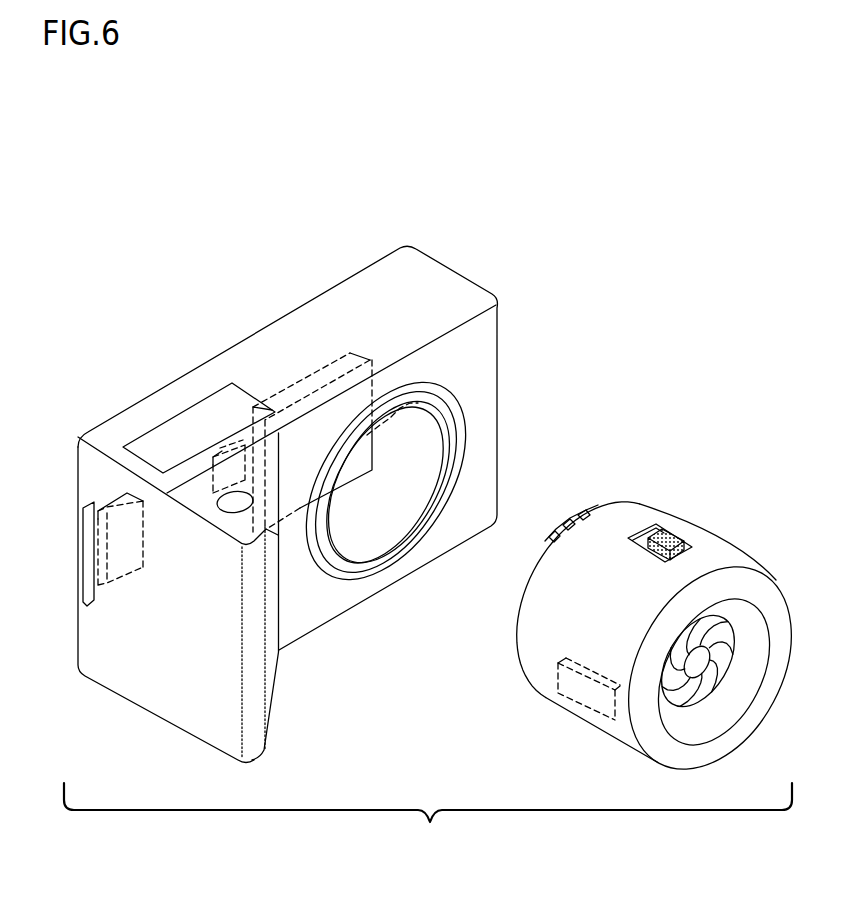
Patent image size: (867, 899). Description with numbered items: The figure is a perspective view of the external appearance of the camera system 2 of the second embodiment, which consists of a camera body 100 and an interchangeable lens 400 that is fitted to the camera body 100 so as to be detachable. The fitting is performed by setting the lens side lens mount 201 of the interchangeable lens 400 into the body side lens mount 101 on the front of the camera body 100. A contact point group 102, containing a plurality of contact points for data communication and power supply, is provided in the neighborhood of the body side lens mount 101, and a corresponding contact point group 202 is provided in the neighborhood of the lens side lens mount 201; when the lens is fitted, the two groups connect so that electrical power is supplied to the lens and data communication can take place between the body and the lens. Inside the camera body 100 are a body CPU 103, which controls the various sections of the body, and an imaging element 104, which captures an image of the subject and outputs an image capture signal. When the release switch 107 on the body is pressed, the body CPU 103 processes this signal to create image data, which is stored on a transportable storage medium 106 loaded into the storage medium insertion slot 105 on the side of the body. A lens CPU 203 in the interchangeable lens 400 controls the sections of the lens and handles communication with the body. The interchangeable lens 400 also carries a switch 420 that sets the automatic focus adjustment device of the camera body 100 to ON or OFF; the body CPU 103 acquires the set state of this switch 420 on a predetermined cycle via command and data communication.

The camera system 2 is at (428, 821).
The camera body 100 is at (410, 253).
The body side lens mount 101 is at (462, 418).
The contact point group 102 is at (422, 413).
The body CPU 103 is at (220, 453).
The imaging element 104 is at (350, 353).
The storage medium insertion slot 105 is at (84, 556).
The transportable storage medium 106 is at (117, 497).
The release switch 107 is at (241, 514).
The lens side lens mount 201 is at (520, 617).
The contact point group 202 is at (590, 503).
The lens CPU 203 is at (592, 713).
The interchangeable lens 400 is at (667, 513).
The switch 420 is at (684, 541).